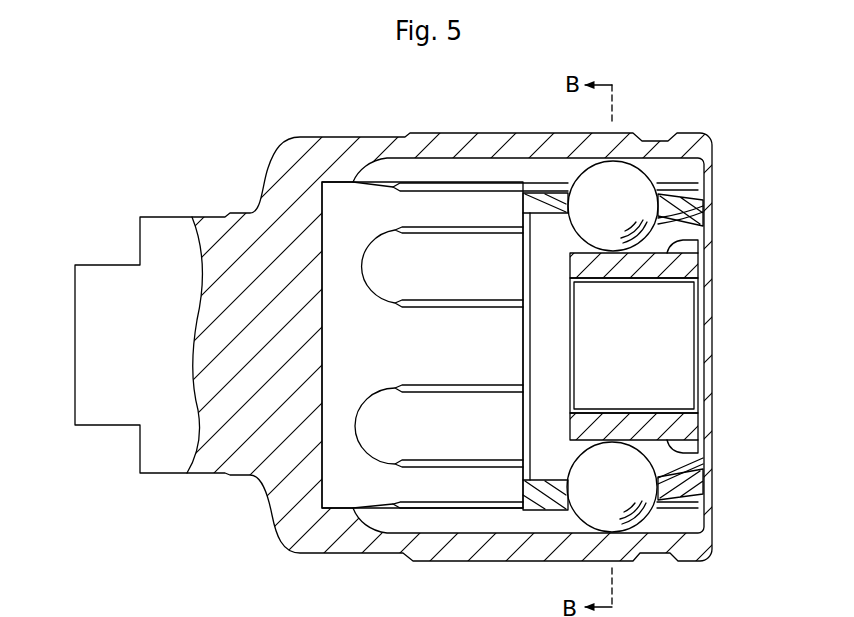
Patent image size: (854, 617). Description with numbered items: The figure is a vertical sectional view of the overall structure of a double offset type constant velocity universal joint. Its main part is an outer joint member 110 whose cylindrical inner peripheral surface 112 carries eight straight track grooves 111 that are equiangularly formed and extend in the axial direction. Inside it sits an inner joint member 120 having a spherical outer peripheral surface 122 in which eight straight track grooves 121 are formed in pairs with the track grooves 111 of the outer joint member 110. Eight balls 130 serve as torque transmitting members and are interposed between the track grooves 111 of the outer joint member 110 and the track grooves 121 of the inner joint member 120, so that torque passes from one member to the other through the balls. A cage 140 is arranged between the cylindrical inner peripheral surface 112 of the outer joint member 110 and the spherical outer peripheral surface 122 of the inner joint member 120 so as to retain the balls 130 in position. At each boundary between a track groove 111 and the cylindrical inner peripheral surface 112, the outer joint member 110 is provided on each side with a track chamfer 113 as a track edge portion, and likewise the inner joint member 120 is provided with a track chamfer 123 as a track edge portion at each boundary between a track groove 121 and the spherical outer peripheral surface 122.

The outer joint member 110 is at (417, 126).
The track grooves 111 is at (487, 160).
The cylindrical inner peripheral surface 112 is at (483, 368).
The track chamfer 113 is at (483, 305).
The inner joint member 120 is at (563, 448).
The track grooves 121 is at (692, 240).
The spherical outer peripheral surface 122 is at (676, 494).
The track chamfer 123 is at (697, 203).
The balls 130 is at (647, 160).
The cage 140 is at (706, 491).